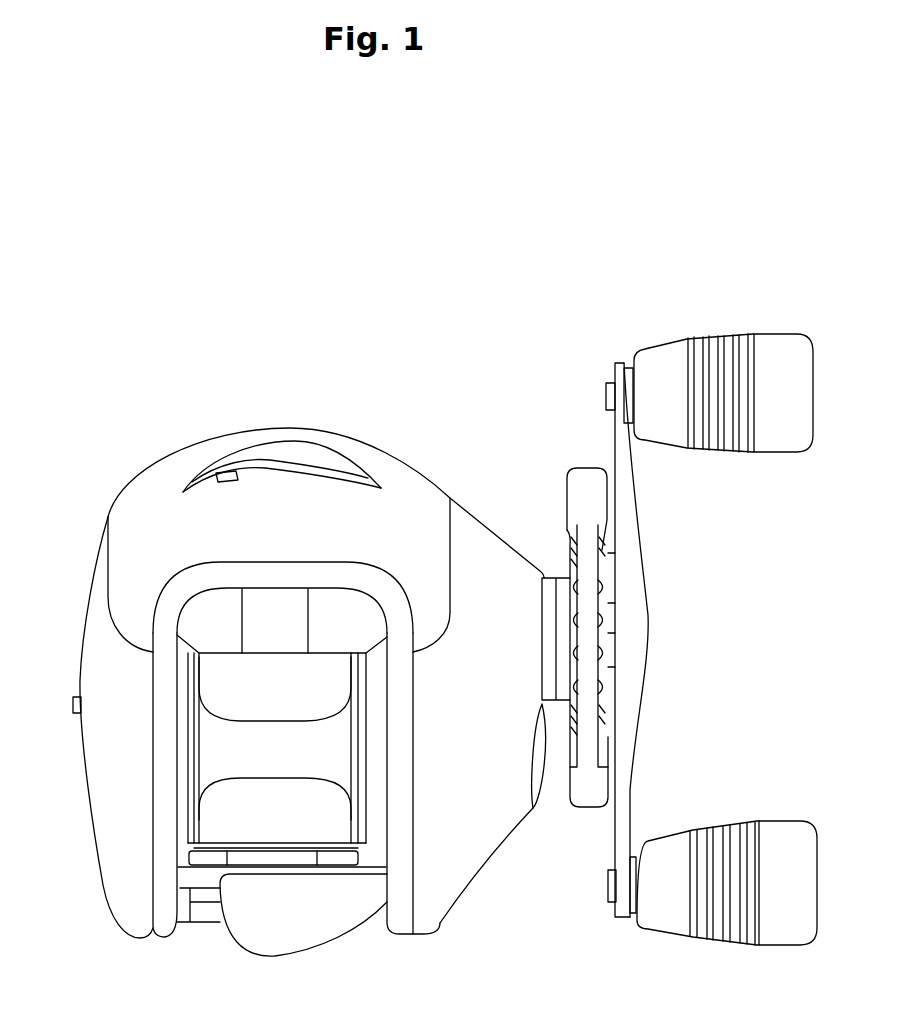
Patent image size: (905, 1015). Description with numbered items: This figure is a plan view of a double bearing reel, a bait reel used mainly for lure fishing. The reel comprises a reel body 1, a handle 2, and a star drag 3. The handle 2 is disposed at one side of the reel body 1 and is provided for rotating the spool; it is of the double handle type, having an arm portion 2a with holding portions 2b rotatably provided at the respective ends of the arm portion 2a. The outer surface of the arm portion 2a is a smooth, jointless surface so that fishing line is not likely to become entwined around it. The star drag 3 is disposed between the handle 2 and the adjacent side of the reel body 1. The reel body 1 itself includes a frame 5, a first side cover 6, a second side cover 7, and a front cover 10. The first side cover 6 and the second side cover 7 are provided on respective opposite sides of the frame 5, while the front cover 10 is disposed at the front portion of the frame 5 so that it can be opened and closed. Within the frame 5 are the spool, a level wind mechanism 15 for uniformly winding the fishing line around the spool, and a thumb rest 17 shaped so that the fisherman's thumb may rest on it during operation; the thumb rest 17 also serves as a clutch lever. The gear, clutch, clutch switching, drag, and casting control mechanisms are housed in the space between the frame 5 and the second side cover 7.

The reel body 1 is at (128, 476).
The handle 2 is at (631, 503).
The arm portion 2a is at (649, 612).
The holding portions 2b is at (720, 338).
The star drag 3 is at (575, 486).
The frame 5 is at (155, 938).
The first side cover 6 is at (103, 888).
The second side cover 7 is at (438, 890).
The front cover 10 is at (307, 493).
The level wind mechanism 15 is at (229, 458).
The thumb rest 17 is at (287, 917).